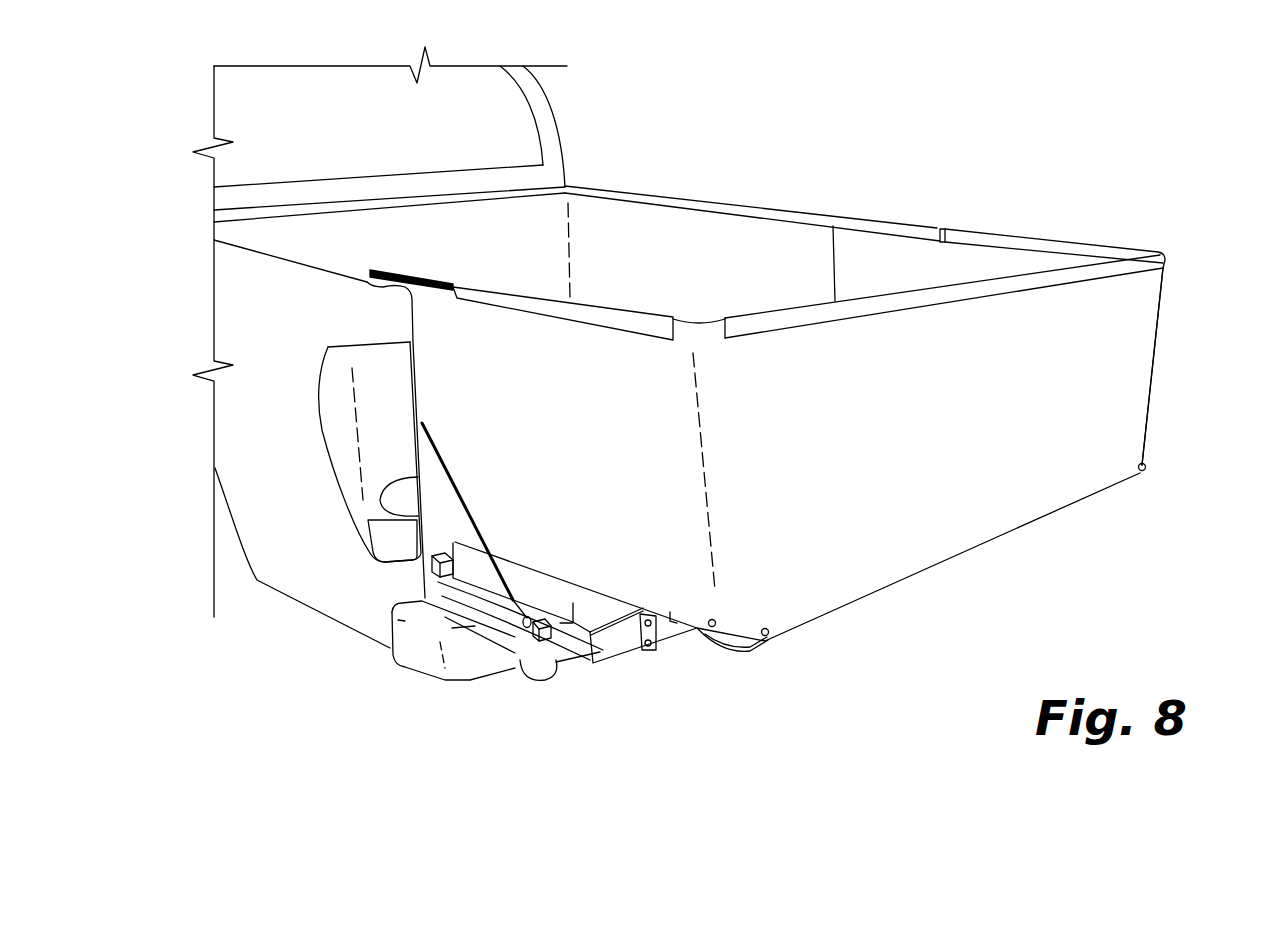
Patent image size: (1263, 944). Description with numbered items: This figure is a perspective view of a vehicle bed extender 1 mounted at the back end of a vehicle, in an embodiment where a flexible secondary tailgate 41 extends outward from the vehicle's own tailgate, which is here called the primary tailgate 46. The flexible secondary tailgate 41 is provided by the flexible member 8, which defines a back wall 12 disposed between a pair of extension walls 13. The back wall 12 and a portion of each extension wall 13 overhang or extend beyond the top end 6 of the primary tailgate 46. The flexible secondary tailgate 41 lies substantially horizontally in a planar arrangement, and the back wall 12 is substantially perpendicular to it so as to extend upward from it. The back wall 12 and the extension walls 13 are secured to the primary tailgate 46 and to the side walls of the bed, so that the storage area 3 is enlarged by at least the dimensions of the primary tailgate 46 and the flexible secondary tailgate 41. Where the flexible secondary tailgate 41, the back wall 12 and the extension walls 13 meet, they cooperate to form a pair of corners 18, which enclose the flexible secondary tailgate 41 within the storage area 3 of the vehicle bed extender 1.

The vehicle bed extender 1 is at (1092, 220).
The storage area 3 is at (607, 230).
The top end 6 is at (603, 647).
The flexible member 8 is at (1113, 367).
The back wall 12 is at (927, 427).
The extension walls 13 is at (973, 263).
The corners 18 is at (1147, 470).
The flexible secondary tailgate 41 is at (705, 646).
The primary tailgate 46 is at (487, 580).